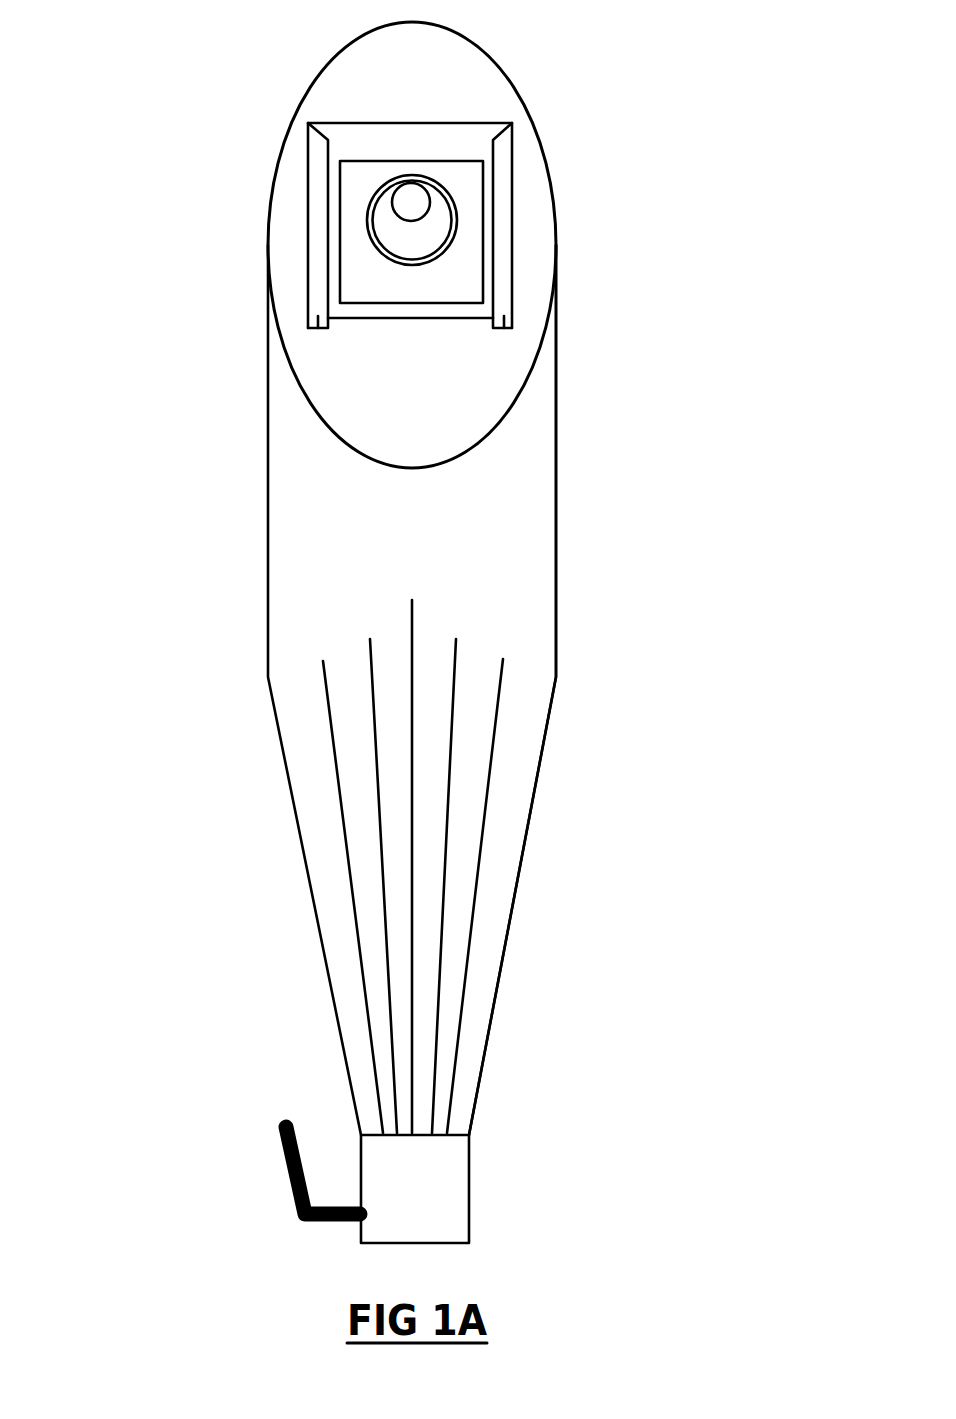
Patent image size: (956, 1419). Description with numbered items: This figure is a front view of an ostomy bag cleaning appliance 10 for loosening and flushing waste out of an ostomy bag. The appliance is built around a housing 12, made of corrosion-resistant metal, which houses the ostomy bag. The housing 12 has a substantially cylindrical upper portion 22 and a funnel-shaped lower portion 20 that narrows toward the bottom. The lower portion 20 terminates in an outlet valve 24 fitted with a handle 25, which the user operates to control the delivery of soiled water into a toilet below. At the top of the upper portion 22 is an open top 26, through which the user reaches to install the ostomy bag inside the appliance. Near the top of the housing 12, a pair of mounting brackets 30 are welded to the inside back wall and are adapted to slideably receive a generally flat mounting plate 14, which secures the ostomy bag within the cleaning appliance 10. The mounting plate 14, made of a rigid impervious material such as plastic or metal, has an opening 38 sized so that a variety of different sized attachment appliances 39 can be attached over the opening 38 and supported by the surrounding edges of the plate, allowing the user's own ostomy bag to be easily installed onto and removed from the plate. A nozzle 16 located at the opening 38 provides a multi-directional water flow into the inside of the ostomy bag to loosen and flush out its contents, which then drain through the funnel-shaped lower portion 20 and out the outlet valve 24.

The ostomy bag cleaning appliance 10 is at (166, 432).
The housing 12 is at (598, 501).
The mounting plate 14 is at (372, 120).
The nozzle 16 is at (415, 207).
The funnel-shaped lower portion 20 is at (498, 860).
The substantially cylindrical upper portion 22 is at (557, 400).
The outlet valve 24 is at (472, 1183).
The handle 25 is at (285, 1122).
The open top 26 is at (433, 67).
The mounting brackets 30 is at (318, 325).
The opening 38 is at (393, 228).
The attachment appliances 39 is at (458, 173).